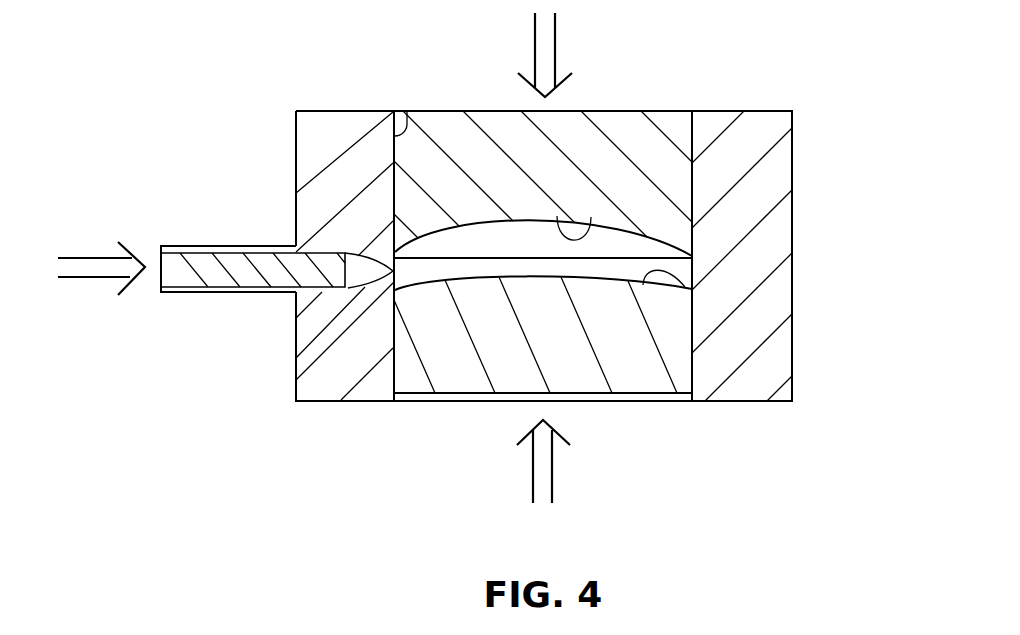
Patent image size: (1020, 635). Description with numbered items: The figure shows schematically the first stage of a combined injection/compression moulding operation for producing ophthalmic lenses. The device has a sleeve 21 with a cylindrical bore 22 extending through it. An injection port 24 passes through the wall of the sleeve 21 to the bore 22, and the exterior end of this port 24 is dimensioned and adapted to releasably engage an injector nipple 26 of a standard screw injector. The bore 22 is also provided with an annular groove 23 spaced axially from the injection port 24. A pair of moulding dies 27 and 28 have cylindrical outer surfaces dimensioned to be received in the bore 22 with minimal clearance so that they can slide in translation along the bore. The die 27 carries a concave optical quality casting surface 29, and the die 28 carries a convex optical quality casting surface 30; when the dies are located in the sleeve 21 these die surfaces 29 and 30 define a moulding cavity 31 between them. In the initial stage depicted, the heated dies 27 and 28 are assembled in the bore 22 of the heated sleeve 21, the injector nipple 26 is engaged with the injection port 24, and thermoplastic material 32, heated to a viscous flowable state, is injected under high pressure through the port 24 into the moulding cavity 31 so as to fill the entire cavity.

The sleeve 21 is at (320, 130).
The cylindrical bore 22 is at (404, 112).
The annular groove 23 is at (487, 255).
The injection port 24 is at (366, 276).
The injector nipple 26 is at (172, 296).
The moulding die 27 is at (453, 127).
The moulding die 28 is at (630, 367).
The concave optical quality casting surface 29 is at (578, 233).
The convex optical quality casting surface 30 is at (640, 283).
The moulding cavity 31 is at (646, 245).
The thermoplastic material 32 is at (246, 270).